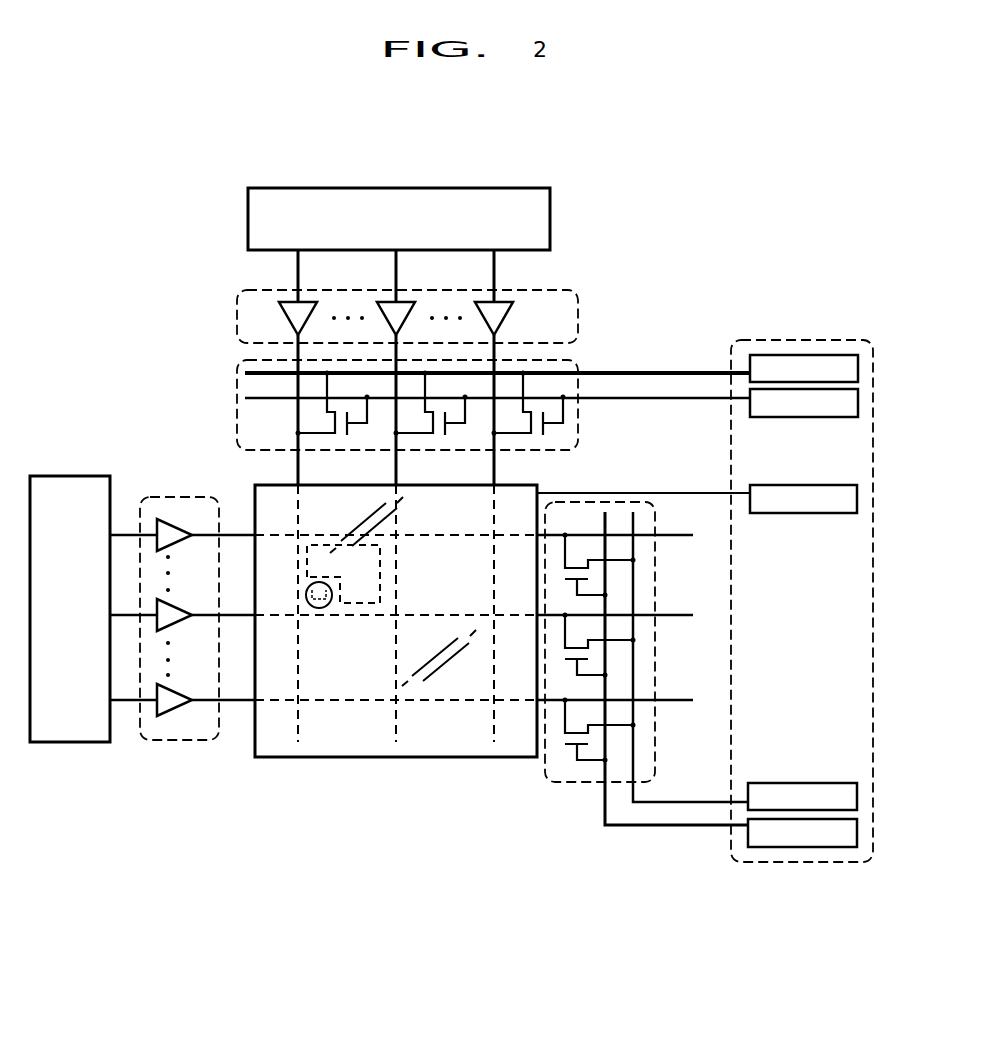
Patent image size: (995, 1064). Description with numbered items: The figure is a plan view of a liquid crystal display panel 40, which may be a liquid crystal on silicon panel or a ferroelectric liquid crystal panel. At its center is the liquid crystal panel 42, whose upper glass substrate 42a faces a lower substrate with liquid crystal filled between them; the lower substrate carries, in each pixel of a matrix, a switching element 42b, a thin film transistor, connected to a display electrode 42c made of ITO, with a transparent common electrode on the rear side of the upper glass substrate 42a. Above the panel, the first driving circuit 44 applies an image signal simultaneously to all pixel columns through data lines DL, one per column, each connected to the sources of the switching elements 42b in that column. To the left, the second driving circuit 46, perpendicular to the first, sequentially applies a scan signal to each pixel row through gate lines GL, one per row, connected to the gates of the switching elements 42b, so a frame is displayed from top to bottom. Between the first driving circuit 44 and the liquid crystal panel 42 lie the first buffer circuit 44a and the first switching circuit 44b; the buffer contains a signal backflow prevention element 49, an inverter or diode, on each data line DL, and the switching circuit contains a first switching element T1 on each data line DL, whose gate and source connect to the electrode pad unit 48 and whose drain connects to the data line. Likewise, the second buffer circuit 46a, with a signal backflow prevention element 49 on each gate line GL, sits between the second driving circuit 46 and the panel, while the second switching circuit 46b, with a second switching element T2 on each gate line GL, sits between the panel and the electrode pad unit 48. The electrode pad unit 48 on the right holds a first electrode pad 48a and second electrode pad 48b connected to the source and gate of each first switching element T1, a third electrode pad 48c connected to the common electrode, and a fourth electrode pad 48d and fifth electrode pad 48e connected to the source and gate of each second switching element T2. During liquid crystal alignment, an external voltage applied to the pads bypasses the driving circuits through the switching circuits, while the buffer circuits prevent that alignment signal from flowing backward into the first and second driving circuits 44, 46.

The liquid crystal display panel 40 is at (105, 233).
The first driving circuit 44 is at (250, 217).
The first buffer circuit 44a is at (578, 315).
The first switching circuit 44b is at (493, 421).
The first switching element T1 is at (555, 438).
The signal backflow prevention element 49 is at (177, 517).
The data line DL is at (292, 464).
The gate line GL is at (125, 533).
The second driving circuit 46 is at (75, 476).
The second buffer circuit 46a is at (183, 743).
The second switching circuit 46b is at (629, 695).
The second switching element T2 is at (563, 760).
The liquid crystal panel 42 is at (396, 683).
The upper glass substrate 42a is at (408, 762).
The switching element 42b is at (322, 607).
The display electrode 42c is at (375, 569).
The electrode pad unit 48 is at (723, 622).
The first electrode pad 48a is at (768, 365).
The second electrode pad 48b is at (818, 402).
The third electrode pad 48c is at (807, 505).
The fourth electrode pad 48d is at (767, 802).
The fifth electrode pad 48e is at (817, 843).